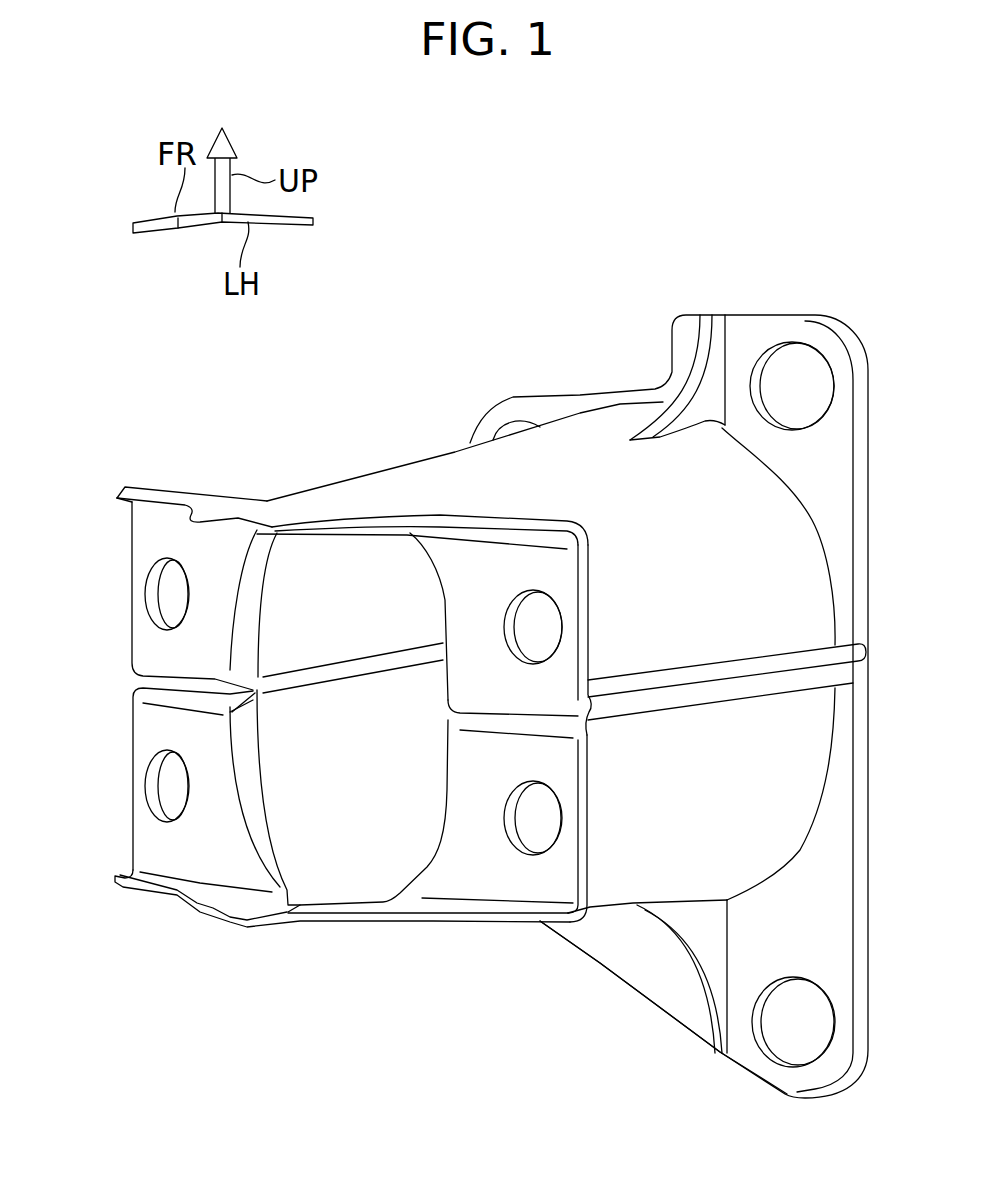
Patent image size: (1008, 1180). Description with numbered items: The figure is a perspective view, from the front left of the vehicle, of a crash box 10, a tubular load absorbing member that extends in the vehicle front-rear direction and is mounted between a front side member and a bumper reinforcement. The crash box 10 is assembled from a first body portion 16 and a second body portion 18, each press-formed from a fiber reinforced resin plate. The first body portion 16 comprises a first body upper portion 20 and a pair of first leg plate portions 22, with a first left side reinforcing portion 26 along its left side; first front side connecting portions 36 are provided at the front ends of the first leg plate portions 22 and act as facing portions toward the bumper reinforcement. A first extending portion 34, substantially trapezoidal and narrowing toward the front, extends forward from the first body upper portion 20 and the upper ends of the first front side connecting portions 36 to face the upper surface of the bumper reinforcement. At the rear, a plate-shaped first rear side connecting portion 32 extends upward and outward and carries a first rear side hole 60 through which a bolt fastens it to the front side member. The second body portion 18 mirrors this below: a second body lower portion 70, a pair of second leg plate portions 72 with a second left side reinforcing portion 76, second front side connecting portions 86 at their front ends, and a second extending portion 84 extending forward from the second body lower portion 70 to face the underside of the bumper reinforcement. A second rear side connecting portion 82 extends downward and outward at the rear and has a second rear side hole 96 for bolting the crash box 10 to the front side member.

The crash box 10 is at (738, 237).
The first body portion 16 is at (715, 597).
The second body portion 18 is at (745, 777).
The first body upper portion 20 is at (458, 460).
The first leg plate portions 22 is at (340, 612).
The first left side reinforcing portion 26 is at (662, 680).
The first rear side connecting portion 32 is at (742, 322).
The first extending portion 34 is at (275, 495).
The first front side connecting portions 36 is at (150, 545).
The first rear side hole 60 is at (795, 345).
The second body lower portion 70 is at (605, 912).
The second leg plate portions 72 is at (340, 786).
The second left side reinforcing portion 76 is at (680, 705).
The second rear side connecting portion 82 is at (678, 1012).
The second extending portion 84 is at (320, 923).
The second front side connecting portions 86 is at (153, 845).
The second rear side hole 96 is at (757, 998).